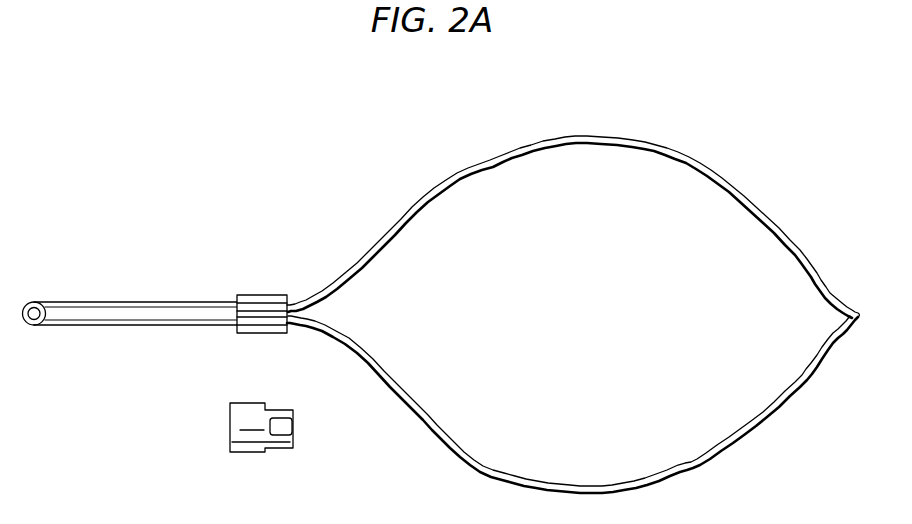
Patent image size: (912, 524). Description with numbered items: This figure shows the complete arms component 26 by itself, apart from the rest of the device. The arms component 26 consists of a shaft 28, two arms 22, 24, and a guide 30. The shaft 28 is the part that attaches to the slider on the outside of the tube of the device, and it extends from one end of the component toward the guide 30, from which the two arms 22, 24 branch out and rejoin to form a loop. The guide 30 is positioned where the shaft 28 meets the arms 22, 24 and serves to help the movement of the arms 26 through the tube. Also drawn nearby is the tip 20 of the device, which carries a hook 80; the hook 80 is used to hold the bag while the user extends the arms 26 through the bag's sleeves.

The tip 20 is at (304, 405).
The arm 22 is at (597, 147).
The arm 24 is at (596, 482).
The arms component 26 is at (573, 299).
The shaft 28 is at (124, 300).
The guide 30 is at (263, 295).
The hook 80 is at (283, 427).